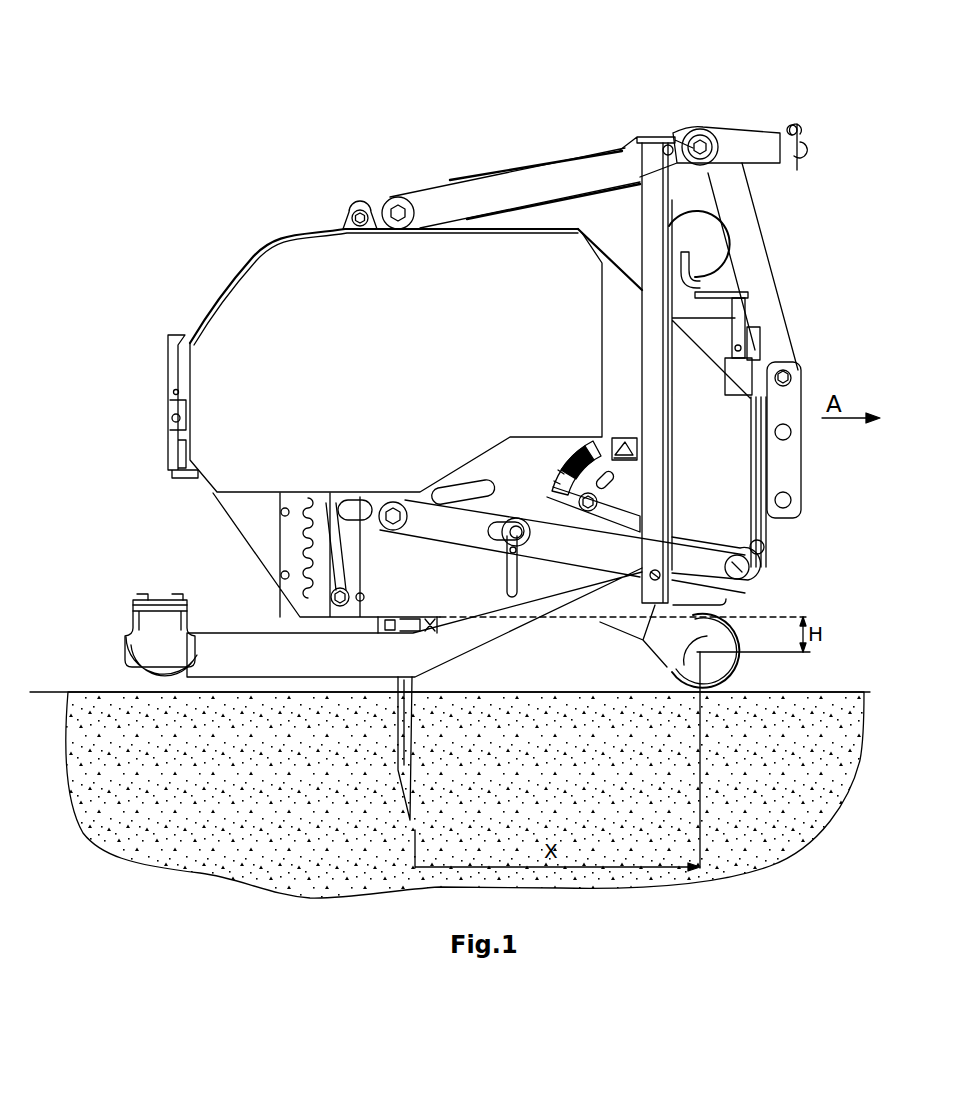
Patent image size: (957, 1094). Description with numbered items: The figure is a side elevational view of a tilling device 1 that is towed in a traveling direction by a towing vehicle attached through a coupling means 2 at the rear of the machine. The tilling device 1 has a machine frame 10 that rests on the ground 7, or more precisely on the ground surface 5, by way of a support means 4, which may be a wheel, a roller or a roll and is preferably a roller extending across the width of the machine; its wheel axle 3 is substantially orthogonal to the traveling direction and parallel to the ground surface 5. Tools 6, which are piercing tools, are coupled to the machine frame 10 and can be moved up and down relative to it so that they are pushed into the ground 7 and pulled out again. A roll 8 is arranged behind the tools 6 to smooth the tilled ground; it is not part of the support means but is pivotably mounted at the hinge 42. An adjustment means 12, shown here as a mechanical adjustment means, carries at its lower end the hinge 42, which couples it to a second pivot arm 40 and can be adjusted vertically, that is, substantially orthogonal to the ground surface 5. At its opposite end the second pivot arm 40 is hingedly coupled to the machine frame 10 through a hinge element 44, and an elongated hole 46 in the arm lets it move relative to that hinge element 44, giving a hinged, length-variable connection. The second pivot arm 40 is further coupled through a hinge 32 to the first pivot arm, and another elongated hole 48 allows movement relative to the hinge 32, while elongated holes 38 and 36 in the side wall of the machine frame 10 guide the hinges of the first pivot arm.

The tilling device 1 is at (612, 106).
The coupling means 2 is at (802, 114).
The wheel axle 3 is at (672, 670).
The support means 4 is at (757, 658).
The ground surface 5 is at (822, 692).
The tools 6 is at (394, 760).
The ground 7 is at (836, 722).
The roll 8 is at (158, 684).
The machine frame 10 is at (413, 563).
The adjustment means 12 is at (752, 299).
The hinge 32 is at (518, 522).
The elongated hole 36 is at (505, 565).
The elongated hole 38 is at (448, 490).
The second pivot arm 40 is at (573, 543).
The hinge 42 is at (749, 567).
The hinge element 44 is at (397, 505).
The elongated hole 46 is at (358, 505).
The elongated hole 48 is at (518, 520).